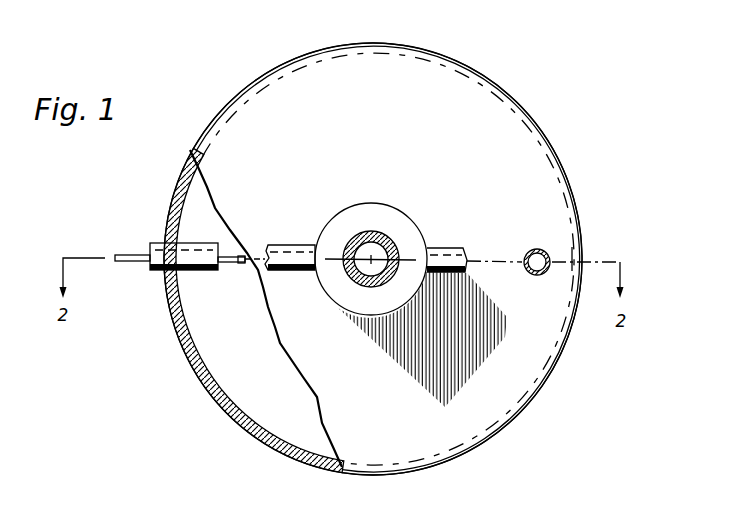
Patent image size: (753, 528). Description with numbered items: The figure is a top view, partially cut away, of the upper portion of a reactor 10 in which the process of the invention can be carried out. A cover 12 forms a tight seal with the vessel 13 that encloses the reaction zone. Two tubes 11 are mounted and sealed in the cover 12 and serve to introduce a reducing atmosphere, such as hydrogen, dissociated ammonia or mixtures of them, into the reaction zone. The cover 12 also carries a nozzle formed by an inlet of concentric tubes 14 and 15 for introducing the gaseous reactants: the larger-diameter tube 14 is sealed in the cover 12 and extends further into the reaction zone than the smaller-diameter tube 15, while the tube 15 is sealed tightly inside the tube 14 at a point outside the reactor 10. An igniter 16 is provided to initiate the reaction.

The reactor 10 is at (616, 132).
The tube 11 is at (539, 248).
The cover 12 is at (540, 387).
The vessel 13 is at (242, 423).
The tube 14 is at (333, 211).
The tube 15 is at (396, 243).
The igniter 16 is at (156, 242).